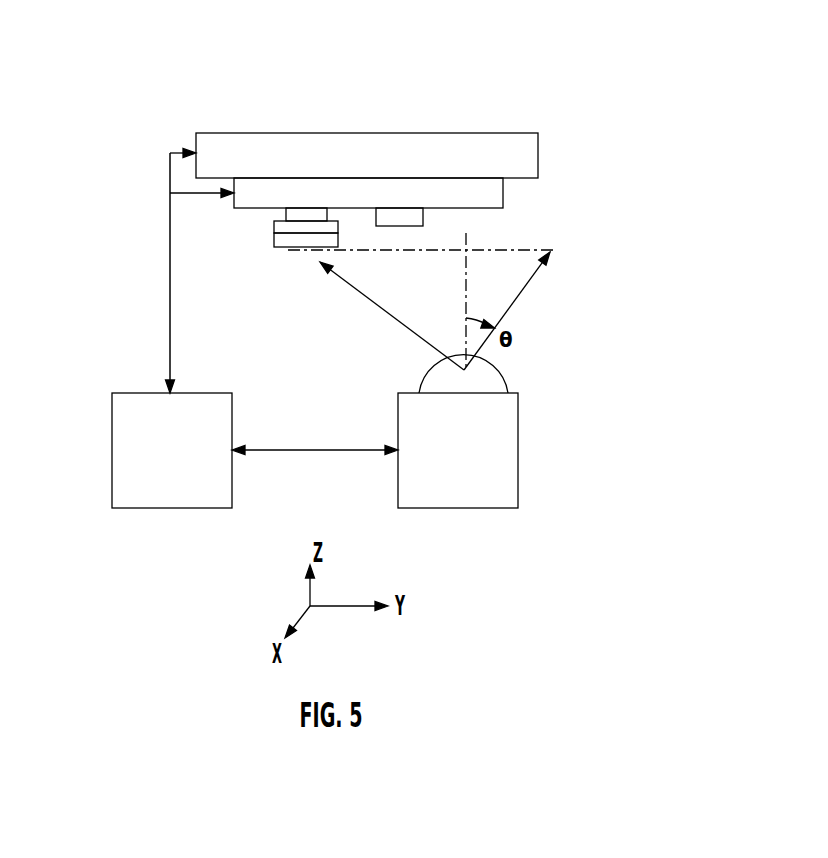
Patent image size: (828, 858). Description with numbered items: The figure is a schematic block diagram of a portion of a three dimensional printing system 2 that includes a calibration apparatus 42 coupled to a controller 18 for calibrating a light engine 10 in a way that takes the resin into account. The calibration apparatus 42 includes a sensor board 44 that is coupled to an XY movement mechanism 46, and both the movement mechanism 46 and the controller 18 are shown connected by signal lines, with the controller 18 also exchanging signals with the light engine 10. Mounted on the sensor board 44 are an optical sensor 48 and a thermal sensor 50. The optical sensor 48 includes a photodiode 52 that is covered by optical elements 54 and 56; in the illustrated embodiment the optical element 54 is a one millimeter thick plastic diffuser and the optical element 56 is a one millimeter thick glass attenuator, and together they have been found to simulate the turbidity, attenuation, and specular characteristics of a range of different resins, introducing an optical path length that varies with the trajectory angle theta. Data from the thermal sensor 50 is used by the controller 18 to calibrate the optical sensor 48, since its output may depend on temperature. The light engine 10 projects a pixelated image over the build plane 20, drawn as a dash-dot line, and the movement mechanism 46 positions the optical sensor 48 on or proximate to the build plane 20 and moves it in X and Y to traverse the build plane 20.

The three dimensional printing system 2 is at (541, 40).
The light engine 10 is at (518, 445).
The controller 18 is at (112, 448).
The build plane 20 is at (540, 247).
The calibration apparatus 42 is at (622, 164).
The sensor board 44 is at (488, 197).
The XY movement mechanism 46 is at (500, 145).
The optical sensor 48 is at (299, 290).
The thermal sensor 50 is at (408, 217).
The photodiode 52 is at (286, 214).
The optical element 54 is at (273, 228).
The optical element 56 is at (273, 240).